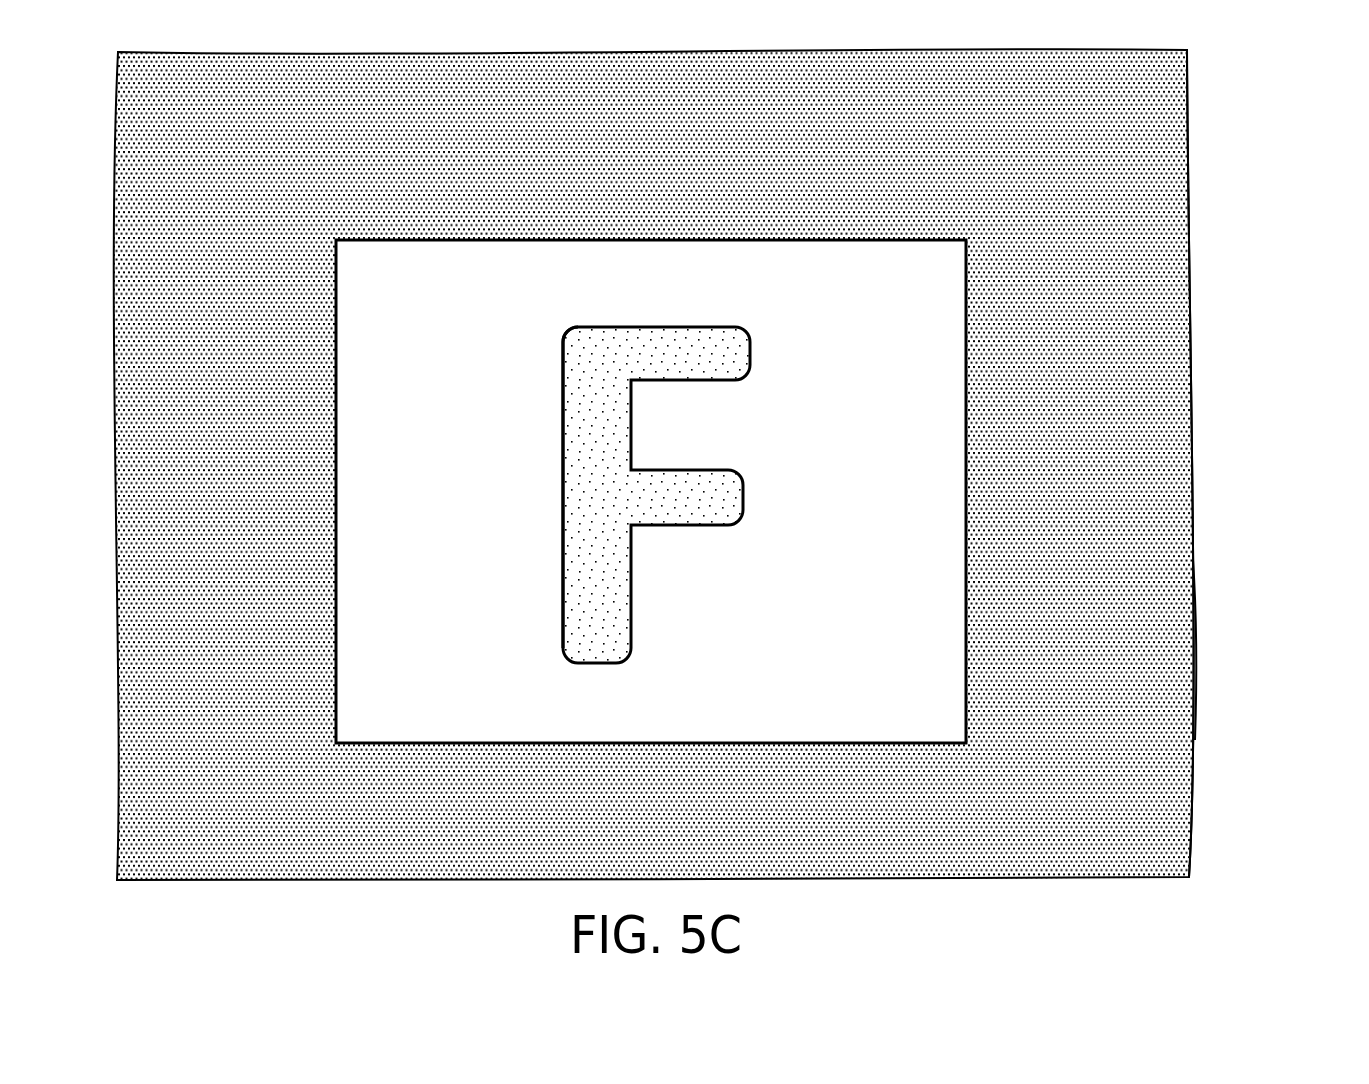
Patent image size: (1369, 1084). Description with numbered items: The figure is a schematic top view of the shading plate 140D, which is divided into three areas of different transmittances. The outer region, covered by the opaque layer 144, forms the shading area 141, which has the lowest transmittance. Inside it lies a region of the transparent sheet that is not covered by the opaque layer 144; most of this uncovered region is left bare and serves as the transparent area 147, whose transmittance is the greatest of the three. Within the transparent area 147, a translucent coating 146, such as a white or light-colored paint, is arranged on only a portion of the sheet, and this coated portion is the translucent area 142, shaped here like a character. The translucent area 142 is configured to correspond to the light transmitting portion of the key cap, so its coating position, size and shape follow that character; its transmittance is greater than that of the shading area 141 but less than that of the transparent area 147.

The shading plate 140D is at (1232, 238).
The shading area 141 is at (1193, 540).
The translucent area 142 is at (593, 368).
The opaque layer 144 is at (1197, 642).
The translucent coating 146 is at (585, 452).
The transparent area 147 is at (420, 563).